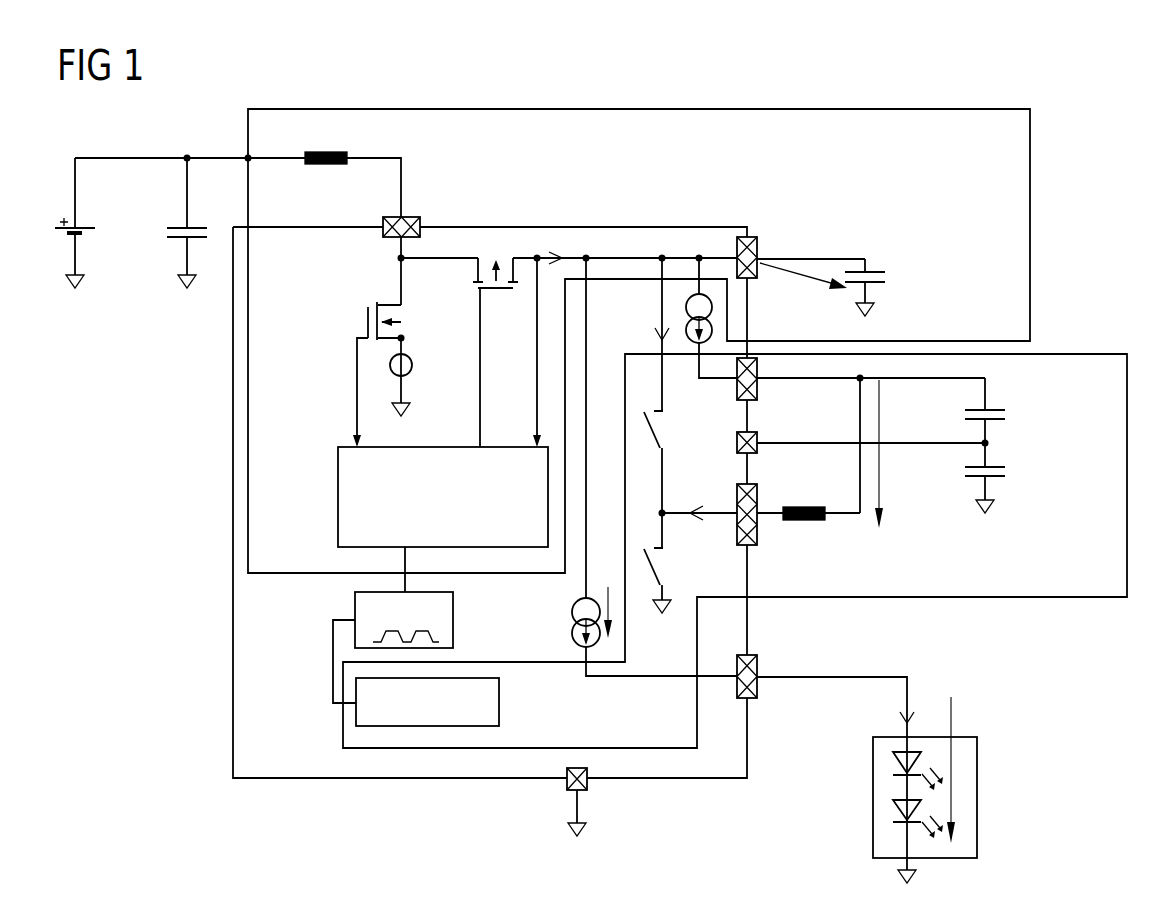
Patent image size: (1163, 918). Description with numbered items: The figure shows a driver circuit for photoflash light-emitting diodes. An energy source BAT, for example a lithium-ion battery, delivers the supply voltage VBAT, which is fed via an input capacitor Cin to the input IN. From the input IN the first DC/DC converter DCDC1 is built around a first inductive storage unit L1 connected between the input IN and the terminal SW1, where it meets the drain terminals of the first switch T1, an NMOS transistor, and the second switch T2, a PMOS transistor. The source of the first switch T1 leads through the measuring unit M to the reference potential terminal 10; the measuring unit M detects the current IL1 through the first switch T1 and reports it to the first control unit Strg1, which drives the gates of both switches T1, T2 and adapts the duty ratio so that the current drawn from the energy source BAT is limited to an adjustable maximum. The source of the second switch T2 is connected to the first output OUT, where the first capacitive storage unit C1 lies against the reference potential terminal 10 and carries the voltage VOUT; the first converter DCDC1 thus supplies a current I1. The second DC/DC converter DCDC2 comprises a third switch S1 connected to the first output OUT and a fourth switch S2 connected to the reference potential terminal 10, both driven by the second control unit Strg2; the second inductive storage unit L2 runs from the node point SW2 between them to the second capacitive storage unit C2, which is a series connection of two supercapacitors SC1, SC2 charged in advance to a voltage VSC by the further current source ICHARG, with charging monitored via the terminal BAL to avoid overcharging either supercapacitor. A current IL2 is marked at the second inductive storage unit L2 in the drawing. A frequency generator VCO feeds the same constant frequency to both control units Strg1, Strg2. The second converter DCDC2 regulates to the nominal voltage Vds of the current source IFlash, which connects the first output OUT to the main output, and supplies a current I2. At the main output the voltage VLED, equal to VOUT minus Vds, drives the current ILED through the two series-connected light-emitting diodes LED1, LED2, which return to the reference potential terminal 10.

The reference potential terminal 10 is at (412, 412).
The first DC/DC converter DCDC1 is at (548, 108).
The second DC/DC converter DCDC2 is at (980, 598).
The supply voltage VBAT is at (101, 140).
The energy source BAT is at (93, 226).
The input capacitor Cin is at (198, 226).
The input IN is at (247, 157).
The first inductive storage unit L1 is at (325, 166).
The terminal SW1 is at (408, 216).
The first switch T1 is at (372, 320).
The current through the first switch IL1 is at (357, 366).
The measuring unit M is at (414, 352).
The second switch T2 is at (497, 291).
The current supplied by the first DC/DC converter I1 is at (557, 253).
The first control unit Strg1 is at (337, 496).
The frequency generator VCO is at (355, 612).
The second control unit Strg2 is at (500, 703).
The first output OUT is at (747, 236).
The voltage at the first output VOUT is at (808, 272).
The first capacitive storage unit C1 is at (876, 270).
The further current source ICHARG is at (712, 310).
The current supplied by the second DC/DC converter I2 is at (660, 335).
The third switch S1 is at (660, 428).
The fourth switch S2 is at (660, 567).
The terminal BAL is at (760, 440).
The second inductor current IL2 is at (695, 512).
The node point SW2 is at (758, 537).
The second inductive storage unit L2 is at (804, 506).
The second capacitive storage unit C2 is at (1041, 445).
The capacitor SC1 is at (1000, 414).
The capacitor SC2 is at (1000, 472).
The voltage VSC is at (880, 492).
The nominal voltage of the current source Vds is at (608, 592).
The current source IFlash is at (572, 623).
The current ILED is at (904, 716).
The voltage VLED is at (955, 714).
The light-emitting diode LED1 is at (895, 765).
The light-emitting diode LED2 is at (895, 812).